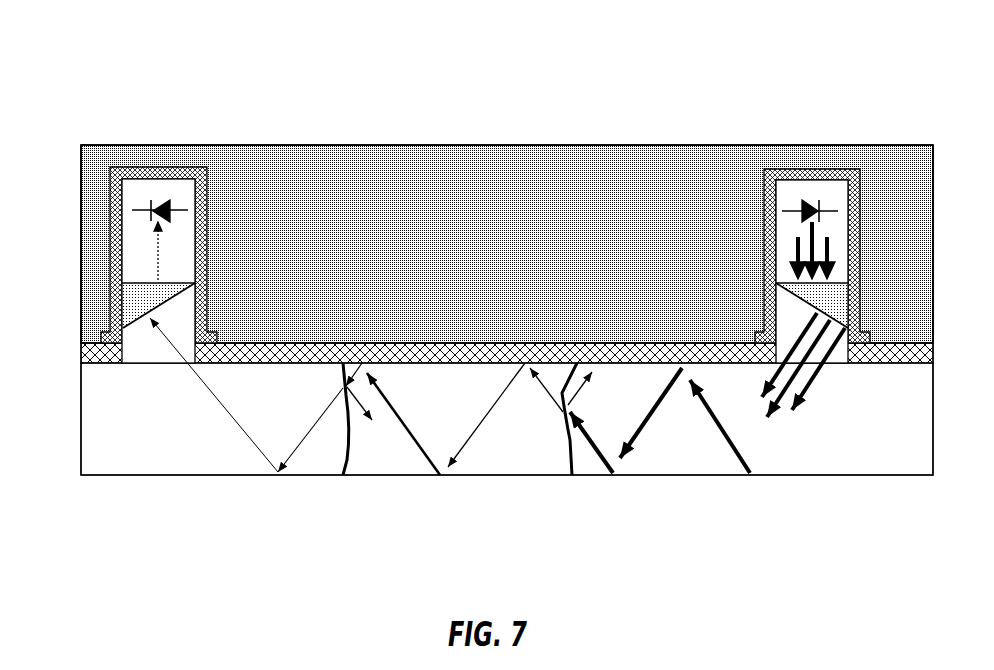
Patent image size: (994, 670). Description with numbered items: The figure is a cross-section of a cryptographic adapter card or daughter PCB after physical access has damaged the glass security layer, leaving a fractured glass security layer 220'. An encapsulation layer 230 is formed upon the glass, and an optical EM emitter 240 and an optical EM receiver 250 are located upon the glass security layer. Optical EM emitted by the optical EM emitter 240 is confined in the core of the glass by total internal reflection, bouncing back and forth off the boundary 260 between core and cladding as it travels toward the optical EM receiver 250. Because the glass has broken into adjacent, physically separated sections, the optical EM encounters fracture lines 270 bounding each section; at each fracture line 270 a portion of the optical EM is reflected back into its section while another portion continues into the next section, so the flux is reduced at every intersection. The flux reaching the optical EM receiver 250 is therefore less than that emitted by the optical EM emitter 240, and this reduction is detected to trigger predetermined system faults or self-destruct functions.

The optical EM receiver 250 is at (289, 101).
The optical EM emitter 240 is at (656, 109).
The encapsulation layer 230 is at (405, 170).
The boundary 260 is at (81, 348).
The fractured glass security layer 220' is at (507, 448).
The fracture lines 270 is at (346, 462).